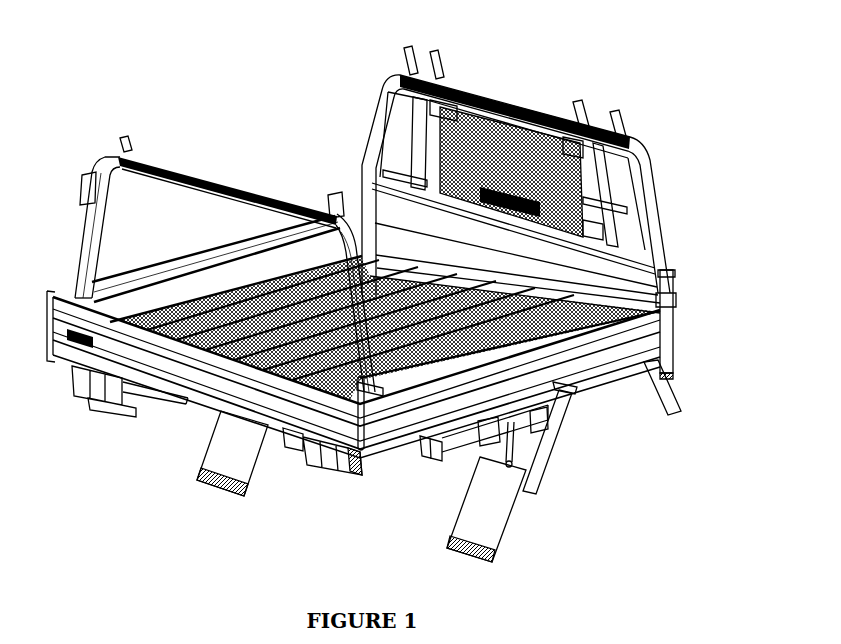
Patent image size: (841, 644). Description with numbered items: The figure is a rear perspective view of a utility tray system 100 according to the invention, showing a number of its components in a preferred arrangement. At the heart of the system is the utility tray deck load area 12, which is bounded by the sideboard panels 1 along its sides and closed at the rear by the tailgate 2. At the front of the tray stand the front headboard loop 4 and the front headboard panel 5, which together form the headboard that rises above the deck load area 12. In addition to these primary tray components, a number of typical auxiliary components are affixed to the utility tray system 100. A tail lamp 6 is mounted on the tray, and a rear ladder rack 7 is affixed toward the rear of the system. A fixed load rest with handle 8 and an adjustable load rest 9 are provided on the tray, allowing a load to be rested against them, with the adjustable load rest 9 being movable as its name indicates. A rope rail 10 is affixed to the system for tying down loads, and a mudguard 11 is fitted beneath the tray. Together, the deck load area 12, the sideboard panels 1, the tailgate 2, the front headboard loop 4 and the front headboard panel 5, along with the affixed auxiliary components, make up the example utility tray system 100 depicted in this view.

The sideboard panels 1 is at (654, 403).
The tailgate 2 is at (210, 370).
The front headboard loop 4 is at (518, 108).
The front headboard panel 5 is at (548, 263).
The tail lamp 6 is at (330, 477).
The rear ladder rack 7 is at (170, 165).
The fixed load rest with handle 8 is at (396, 54).
The adjustable load rest 9 is at (443, 52).
The rope rail 10 is at (451, 452).
The mudguard 11 is at (540, 468).
The utility tray deck load area 12 is at (234, 276).
The utility tray system 100 is at (670, 119).